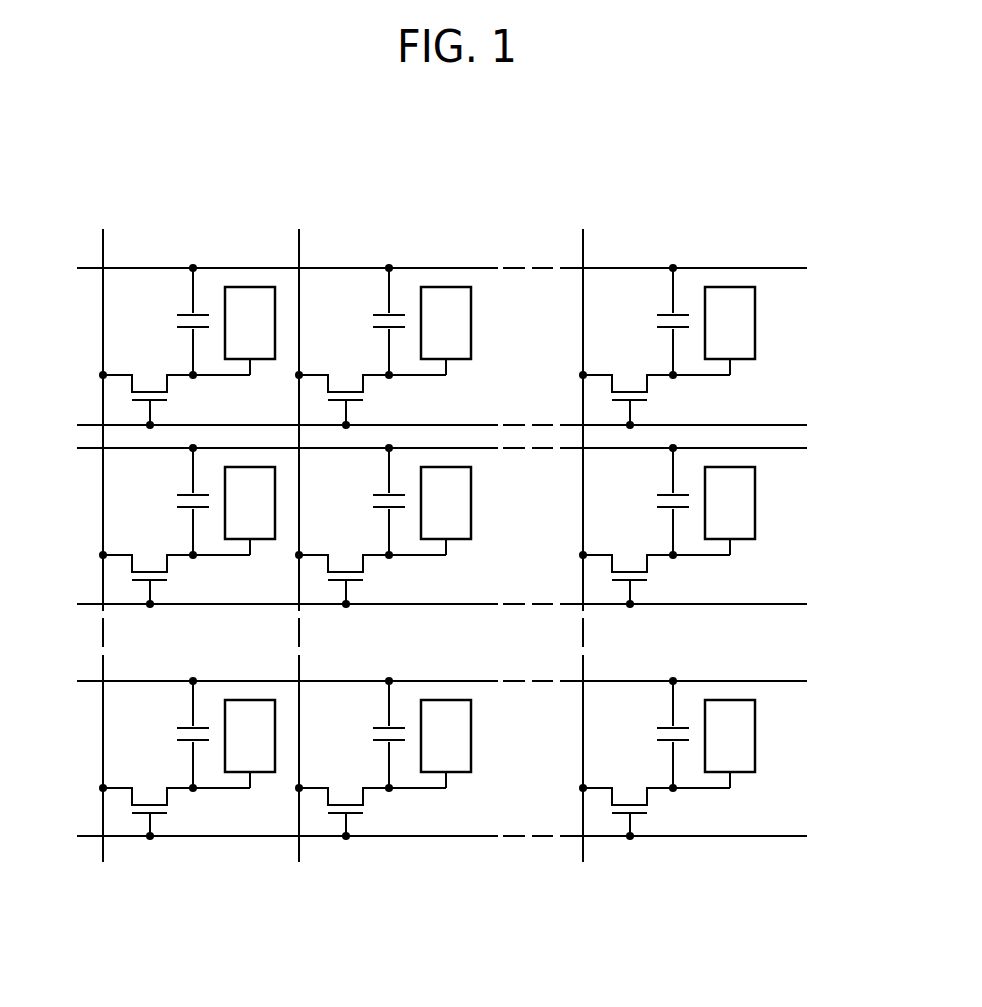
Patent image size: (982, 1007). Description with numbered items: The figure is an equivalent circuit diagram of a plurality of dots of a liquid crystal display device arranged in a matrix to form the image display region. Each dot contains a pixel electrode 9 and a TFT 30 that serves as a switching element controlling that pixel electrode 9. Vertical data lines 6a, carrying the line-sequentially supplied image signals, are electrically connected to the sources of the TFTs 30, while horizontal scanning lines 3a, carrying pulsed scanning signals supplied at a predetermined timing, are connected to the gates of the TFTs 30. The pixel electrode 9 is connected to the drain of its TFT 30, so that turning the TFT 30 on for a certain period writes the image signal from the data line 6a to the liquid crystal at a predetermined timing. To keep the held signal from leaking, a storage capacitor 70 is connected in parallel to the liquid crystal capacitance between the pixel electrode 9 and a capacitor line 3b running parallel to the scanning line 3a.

The data line 6a is at (103, 250).
The capacitor line 3b is at (757, 268).
The scanning line 3a is at (783, 425).
The storage capacitor 70 is at (170, 327).
The TFT 30 is at (170, 390).
The pixel electrode 9 is at (460, 359).